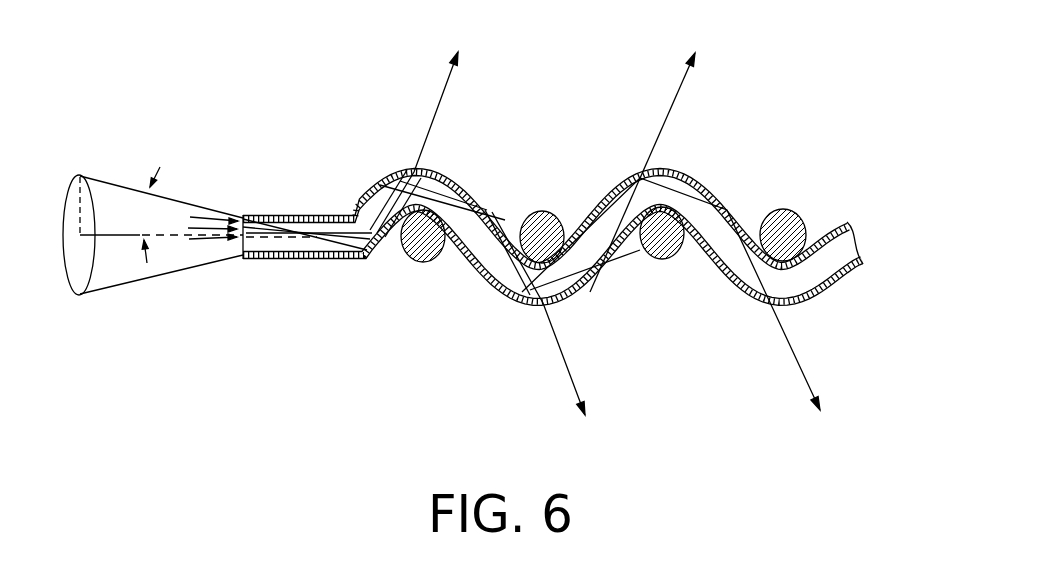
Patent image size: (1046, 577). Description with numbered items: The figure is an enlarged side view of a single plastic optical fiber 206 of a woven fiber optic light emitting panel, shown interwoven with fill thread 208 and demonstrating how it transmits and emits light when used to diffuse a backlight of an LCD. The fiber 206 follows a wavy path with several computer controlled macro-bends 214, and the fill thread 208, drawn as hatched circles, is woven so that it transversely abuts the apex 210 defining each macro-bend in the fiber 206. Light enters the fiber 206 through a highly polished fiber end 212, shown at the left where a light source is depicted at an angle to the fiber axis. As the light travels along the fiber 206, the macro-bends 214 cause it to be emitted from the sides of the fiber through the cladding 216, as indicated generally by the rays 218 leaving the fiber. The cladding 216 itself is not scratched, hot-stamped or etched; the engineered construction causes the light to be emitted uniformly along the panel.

The plastic optical fiber 206 is at (848, 272).
The fill thread 208 is at (425, 268).
The apex 210 is at (630, 250).
The highly polished fiber end 212 is at (240, 257).
The macro-bend 214 is at (362, 257).
The cladding 216 is at (840, 220).
The rays 218 is at (443, 97).